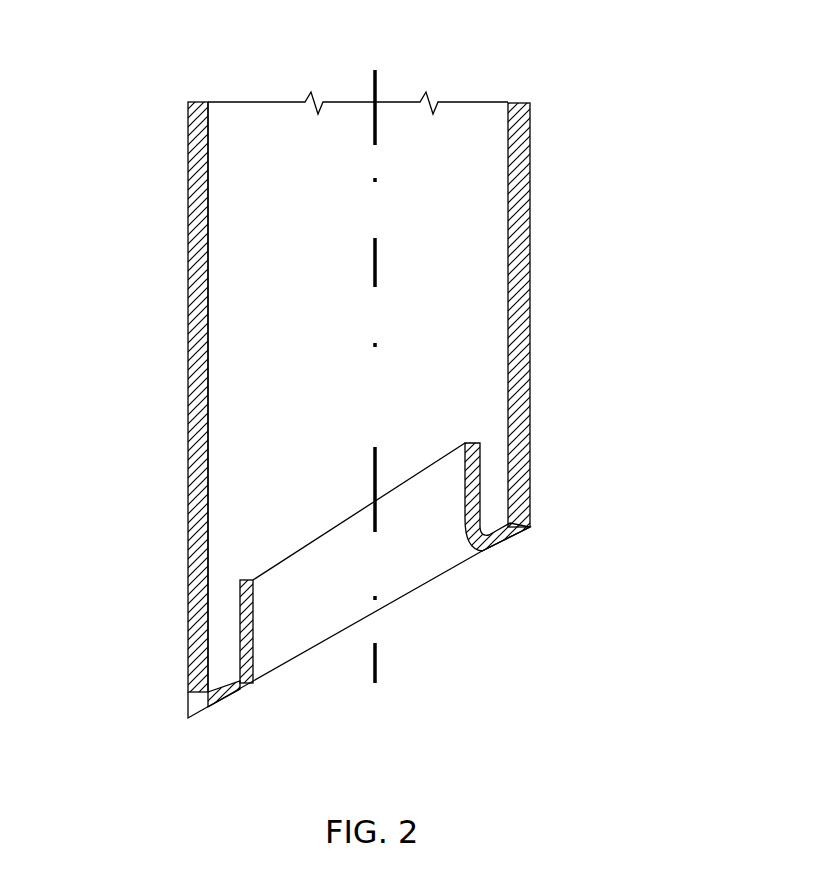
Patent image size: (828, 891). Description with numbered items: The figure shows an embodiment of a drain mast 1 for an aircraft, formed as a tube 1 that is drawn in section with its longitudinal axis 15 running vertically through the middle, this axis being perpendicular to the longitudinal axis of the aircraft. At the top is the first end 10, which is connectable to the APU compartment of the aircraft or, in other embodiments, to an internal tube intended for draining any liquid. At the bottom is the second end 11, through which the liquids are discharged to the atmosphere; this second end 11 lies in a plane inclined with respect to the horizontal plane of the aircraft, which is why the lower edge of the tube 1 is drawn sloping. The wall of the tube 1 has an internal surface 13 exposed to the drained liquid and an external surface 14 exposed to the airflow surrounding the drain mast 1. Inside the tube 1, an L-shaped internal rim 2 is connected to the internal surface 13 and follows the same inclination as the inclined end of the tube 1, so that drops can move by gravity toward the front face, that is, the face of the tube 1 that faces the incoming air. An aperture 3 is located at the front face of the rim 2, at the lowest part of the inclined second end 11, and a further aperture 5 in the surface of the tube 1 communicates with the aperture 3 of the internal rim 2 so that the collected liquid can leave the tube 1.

The drain mast 1 is at (301, 386).
The internal rim 2 is at (465, 505).
The aperture 3 is at (222, 693).
The aperture 5 is at (190, 702).
The first end 10 is at (560, 98).
The second end 11 is at (560, 521).
The internal surface 13 is at (207, 142).
The external surface 14 is at (187, 280).
The longitudinal axis 15 is at (377, 87).